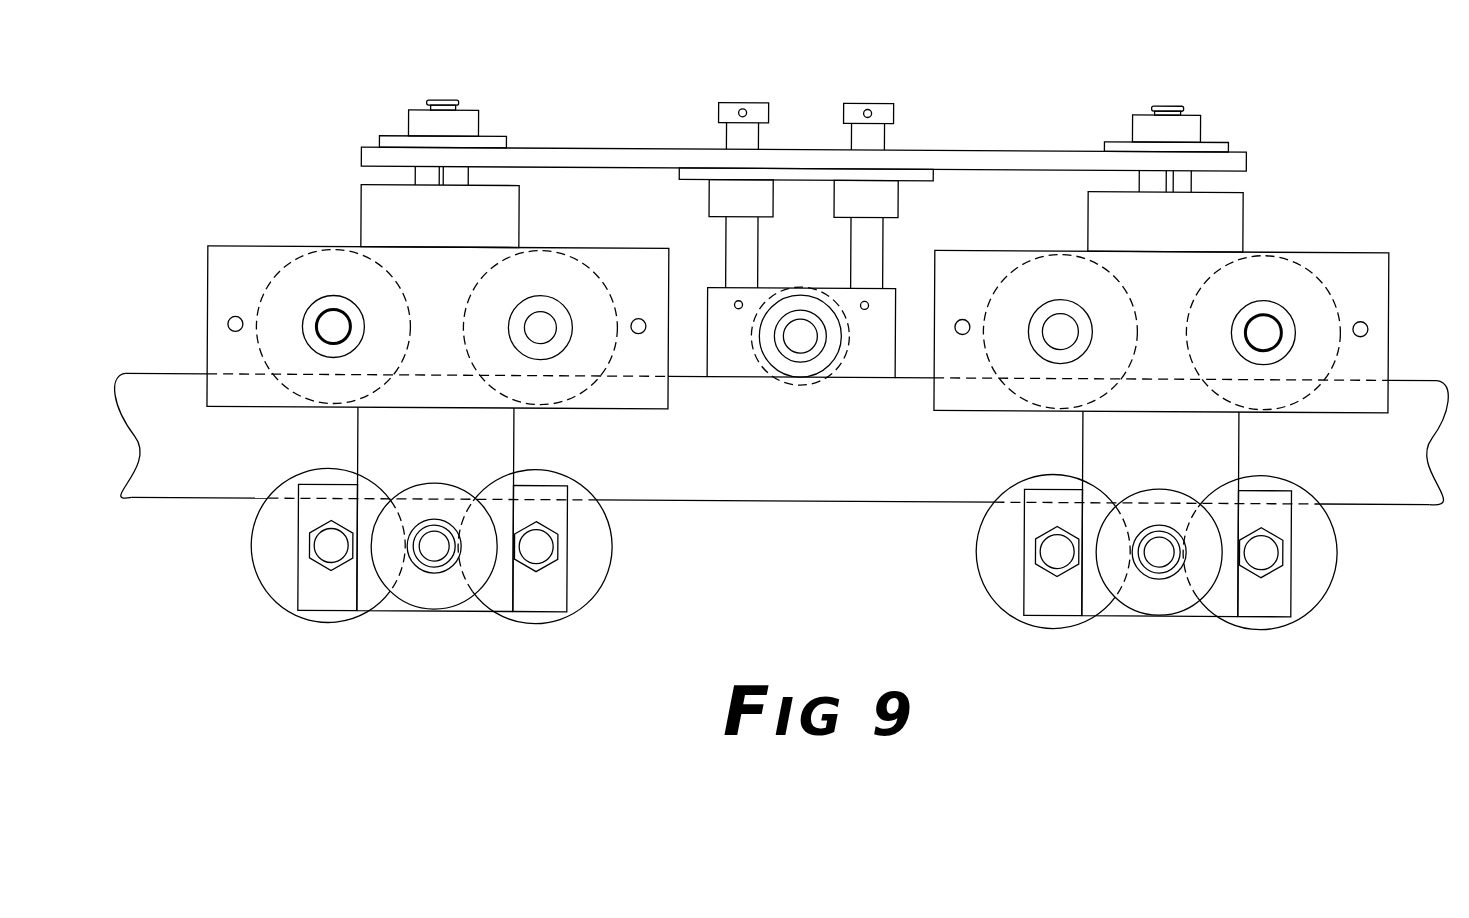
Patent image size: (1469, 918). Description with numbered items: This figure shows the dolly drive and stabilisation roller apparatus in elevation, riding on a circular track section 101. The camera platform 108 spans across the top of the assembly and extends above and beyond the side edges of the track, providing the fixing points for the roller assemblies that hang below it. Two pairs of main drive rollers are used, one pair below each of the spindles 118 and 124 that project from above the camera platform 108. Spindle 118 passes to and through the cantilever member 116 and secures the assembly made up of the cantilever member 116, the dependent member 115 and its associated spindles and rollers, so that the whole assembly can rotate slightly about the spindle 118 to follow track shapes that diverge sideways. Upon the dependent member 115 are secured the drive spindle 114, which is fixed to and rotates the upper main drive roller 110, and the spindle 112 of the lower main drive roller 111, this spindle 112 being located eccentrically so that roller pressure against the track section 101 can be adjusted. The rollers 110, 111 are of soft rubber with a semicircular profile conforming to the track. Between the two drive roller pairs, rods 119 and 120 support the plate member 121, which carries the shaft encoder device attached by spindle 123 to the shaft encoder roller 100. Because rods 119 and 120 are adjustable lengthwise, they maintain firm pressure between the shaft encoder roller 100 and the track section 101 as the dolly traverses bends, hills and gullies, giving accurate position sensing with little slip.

The shaft encoder roller 100 is at (842, 358).
The track section 101 is at (209, 468).
The camera platform 108 is at (1238, 162).
The main drive roller 110 is at (1308, 280).
The main drive roller 111 is at (1263, 485).
The spindle 112 is at (1265, 560).
The drive spindle 114 is at (1267, 333).
The dependent member 115 is at (1226, 234).
The cantilever member 116 is at (1250, 194).
The spindle 118 is at (1165, 103).
The rod 119 is at (857, 101).
The rod 120 is at (748, 101).
The plate member 121 is at (730, 357).
The spindle 123 is at (805, 343).
The spindle 124 is at (445, 100).